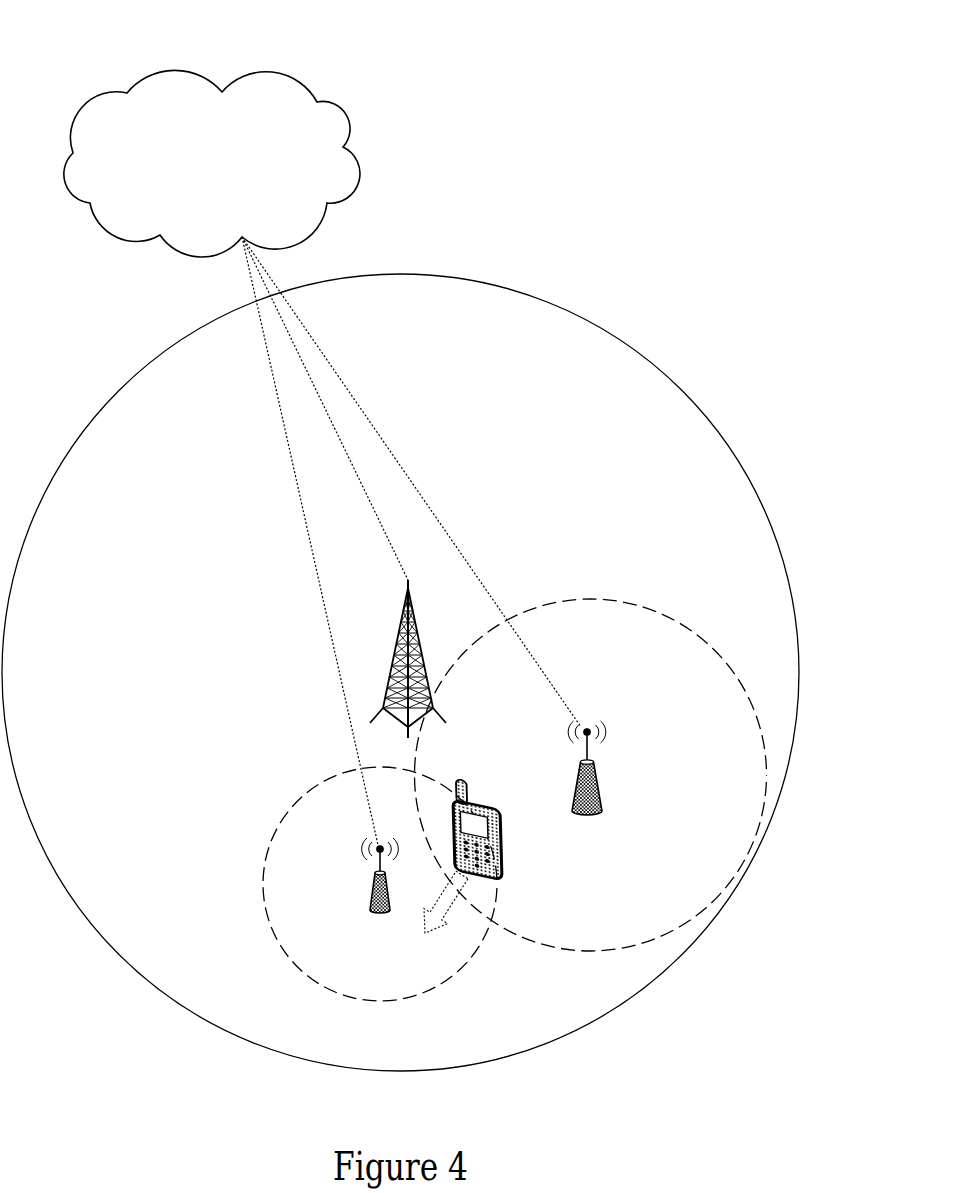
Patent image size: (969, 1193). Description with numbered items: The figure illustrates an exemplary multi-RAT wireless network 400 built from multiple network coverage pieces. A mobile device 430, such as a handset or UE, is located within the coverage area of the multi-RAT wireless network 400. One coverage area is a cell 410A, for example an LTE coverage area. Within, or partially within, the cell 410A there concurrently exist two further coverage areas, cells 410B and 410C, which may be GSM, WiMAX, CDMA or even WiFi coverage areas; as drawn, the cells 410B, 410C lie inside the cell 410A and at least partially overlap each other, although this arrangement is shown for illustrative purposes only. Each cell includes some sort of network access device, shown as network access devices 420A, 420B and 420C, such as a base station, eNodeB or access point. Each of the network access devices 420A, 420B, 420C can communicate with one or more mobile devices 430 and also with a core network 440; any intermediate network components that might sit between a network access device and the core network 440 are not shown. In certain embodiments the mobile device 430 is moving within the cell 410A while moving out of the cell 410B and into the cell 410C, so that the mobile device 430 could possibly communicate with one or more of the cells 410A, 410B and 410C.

The multi-RAT wireless network 400 is at (710, 100).
The cell 410A is at (422, 320).
The cell 410B is at (616, 636).
The cell 410C is at (401, 988).
The network access device 420A is at (533, 506).
The network access device 420B is at (693, 606).
The network access device 420C is at (266, 961).
The mobile device 430 is at (539, 931).
The core network 440 is at (225, 174).